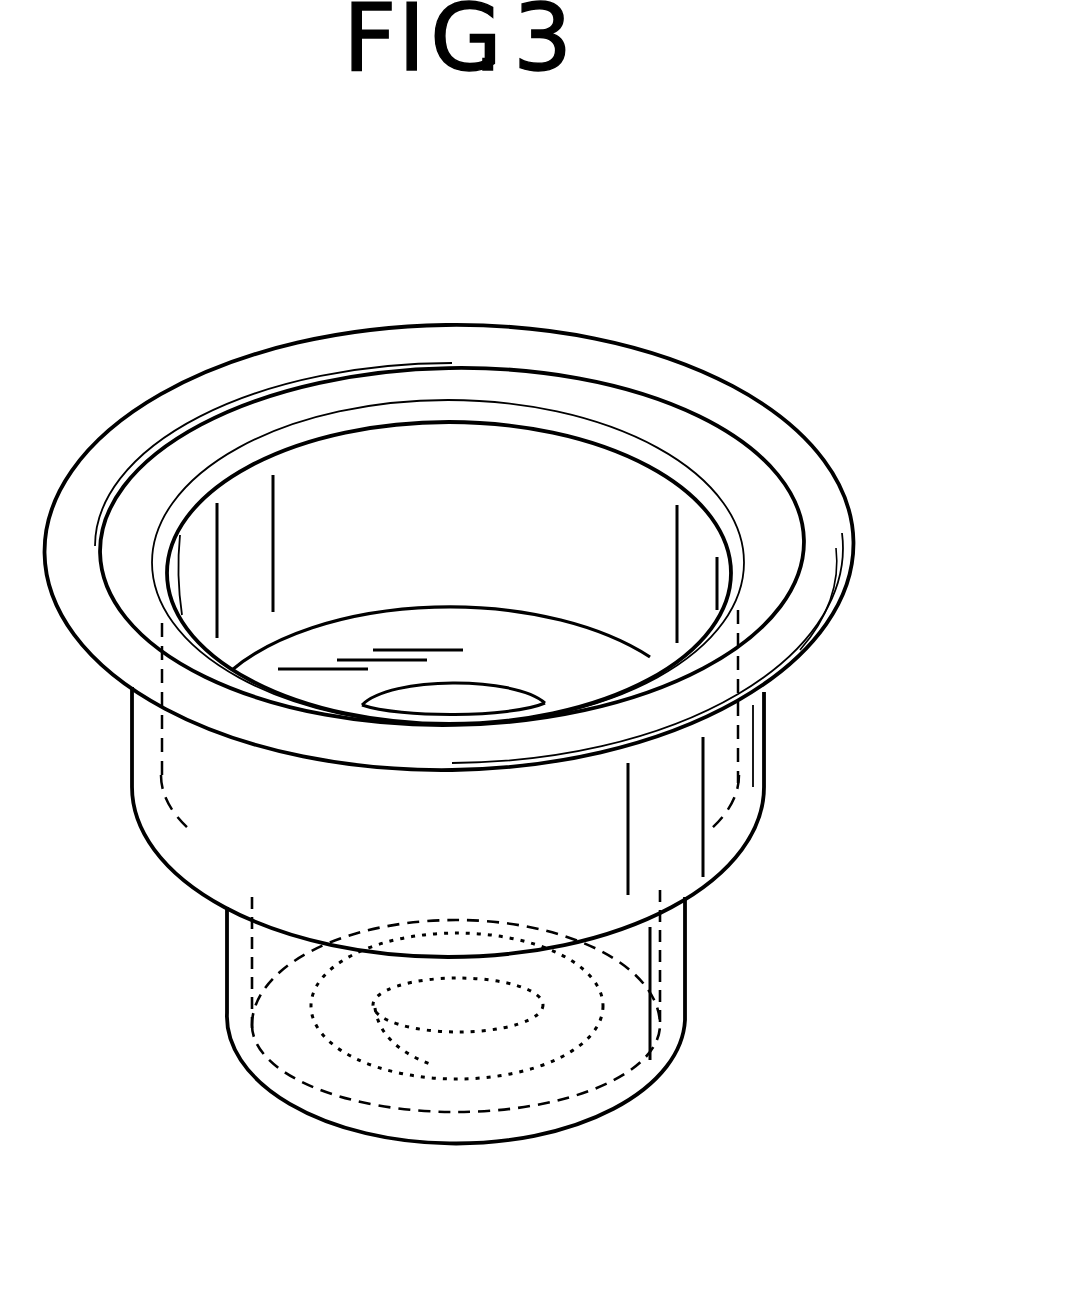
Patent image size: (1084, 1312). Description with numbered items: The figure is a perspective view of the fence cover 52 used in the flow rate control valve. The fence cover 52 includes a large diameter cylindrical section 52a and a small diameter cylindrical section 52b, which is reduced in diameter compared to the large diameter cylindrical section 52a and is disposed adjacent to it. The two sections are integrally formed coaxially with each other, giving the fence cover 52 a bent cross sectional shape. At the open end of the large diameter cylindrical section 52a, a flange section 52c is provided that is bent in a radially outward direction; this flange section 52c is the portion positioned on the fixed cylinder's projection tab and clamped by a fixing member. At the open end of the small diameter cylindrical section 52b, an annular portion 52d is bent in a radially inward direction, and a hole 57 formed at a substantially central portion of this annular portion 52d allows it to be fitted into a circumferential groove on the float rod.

The fence cover 52 is at (750, 313).
The large diameter cylindrical section 52a is at (717, 760).
The small diameter cylindrical section 52b is at (685, 955).
The flange section 52c is at (483, 347).
The annular portion 52d is at (482, 1055).
The hole 57 is at (316, 1088).